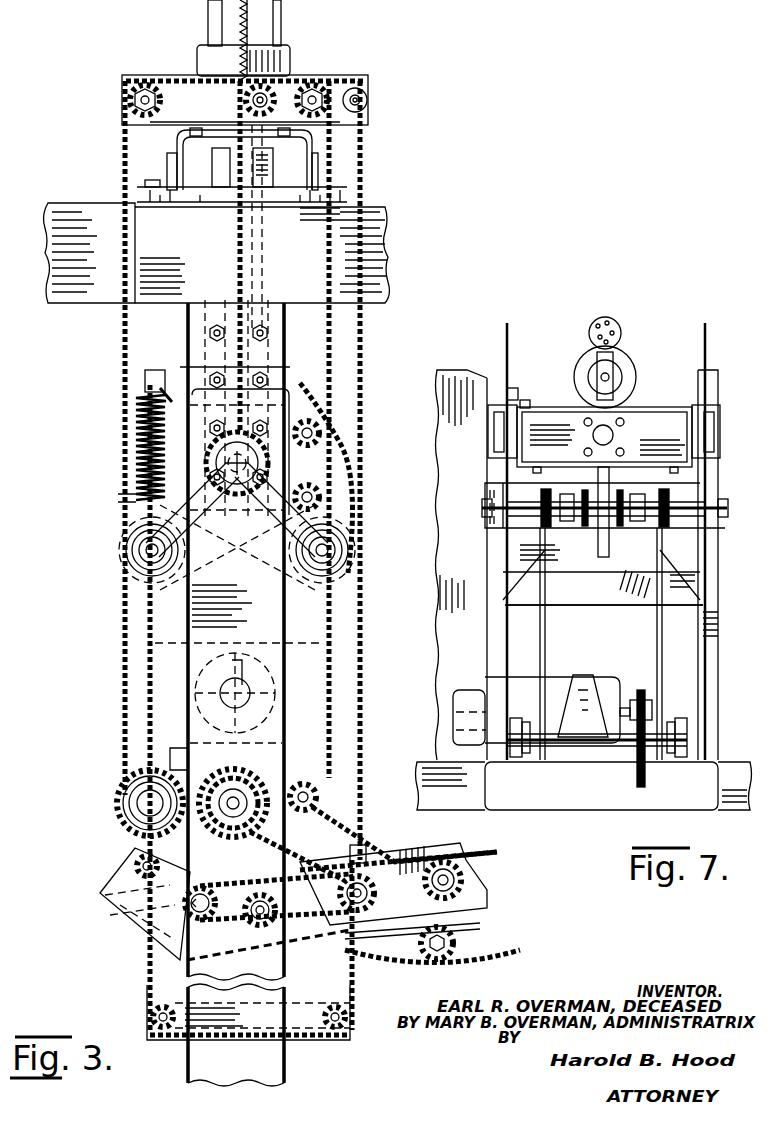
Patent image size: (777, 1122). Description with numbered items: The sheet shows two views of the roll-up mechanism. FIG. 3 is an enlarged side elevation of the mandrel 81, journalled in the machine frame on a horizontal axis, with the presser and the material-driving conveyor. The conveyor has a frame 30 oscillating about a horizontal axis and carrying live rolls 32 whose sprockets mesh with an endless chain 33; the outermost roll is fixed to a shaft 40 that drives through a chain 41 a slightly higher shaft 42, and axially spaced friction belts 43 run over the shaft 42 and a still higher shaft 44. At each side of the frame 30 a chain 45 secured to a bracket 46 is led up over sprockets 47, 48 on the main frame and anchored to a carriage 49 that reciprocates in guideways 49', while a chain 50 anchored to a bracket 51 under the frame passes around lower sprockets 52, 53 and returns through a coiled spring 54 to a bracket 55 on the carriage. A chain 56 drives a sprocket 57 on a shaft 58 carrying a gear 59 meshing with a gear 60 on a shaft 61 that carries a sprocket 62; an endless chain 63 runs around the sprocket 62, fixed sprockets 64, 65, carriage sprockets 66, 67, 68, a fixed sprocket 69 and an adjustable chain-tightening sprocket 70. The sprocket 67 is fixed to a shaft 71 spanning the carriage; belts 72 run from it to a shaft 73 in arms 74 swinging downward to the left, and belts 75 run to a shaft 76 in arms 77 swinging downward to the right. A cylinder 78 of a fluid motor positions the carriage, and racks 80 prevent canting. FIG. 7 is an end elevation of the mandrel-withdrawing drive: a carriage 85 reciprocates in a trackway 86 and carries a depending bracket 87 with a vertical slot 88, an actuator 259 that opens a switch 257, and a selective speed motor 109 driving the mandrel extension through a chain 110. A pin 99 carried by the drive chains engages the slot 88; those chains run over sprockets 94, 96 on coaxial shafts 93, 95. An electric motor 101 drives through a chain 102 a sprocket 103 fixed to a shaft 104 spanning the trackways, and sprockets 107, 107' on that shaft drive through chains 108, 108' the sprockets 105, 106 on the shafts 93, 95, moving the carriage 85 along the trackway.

In FIG. 3, the cylinder 78 is at (265, 25).
In FIG. 3, the rack 80 is at (212, 22).
In FIG. 3, the sprocket 47 is at (368, 118).
In FIG. 3, the sprocket 48 is at (290, 78).
In FIG. 3, the sprocket 64 is at (122, 112).
In FIG. 3, the sprocket 65 is at (322, 82).
In FIG. 3, the guideways 49' is at (242, 165).
In FIG. 3, the chain 45 is at (252, 241).
In FIG. 3, the endless chain 63 is at (122, 162).
In FIG. 3, the chain 50 is at (153, 645).
In FIG. 3, the carriage 49 is at (224, 410).
In FIG. 3, the bracket 55 is at (145, 376).
In FIG. 3, the coiled spring 54 is at (140, 424).
In FIG. 3, the sprocket 67 is at (118, 498).
In FIG. 3, the shaft 71 is at (186, 460).
In FIG. 3, the sprocket 66 is at (317, 430).
In FIG. 3, the sprocket 68 is at (320, 492).
In FIG. 3, the shaft 73 is at (140, 552).
In FIG. 3, the arms 74 is at (130, 535).
In FIG. 3, the belts 72 is at (122, 576).
In FIG. 3, the shaft 76 is at (344, 552).
In FIG. 3, the arms 77 is at (348, 569).
In FIG. 3, the belts 75 is at (292, 556).
In FIG. 3, the mandrel 81 is at (248, 671).
In FIG. 3, the gear 60 is at (125, 832).
In FIG. 3, the sprocket 62 is at (128, 795).
In FIG. 3, the shaft 61 is at (140, 806).
In FIG. 3, the gear 59 is at (255, 780).
In FIG. 3, the shaft 58 is at (245, 795).
In FIG. 3, the chain-tightening sprocket 70 is at (180, 756).
In FIG. 3, the sprocket 69 is at (315, 788).
In FIG. 3, the sprocket 57 is at (283, 830).
In FIG. 3, the bracket 46 is at (350, 852).
In FIG. 3, the friction belts 43 is at (102, 895).
In FIG. 3, the shaft 42 is at (130, 915).
In FIG. 3, the shaft 44 is at (136, 868).
In FIG. 3, the chain 41 is at (190, 950).
In FIG. 3, the shaft 40 is at (283, 945).
In FIG. 3, the bracket 51 is at (340, 952).
In FIG. 3, the frame 30 is at (485, 900).
In FIG. 3, the live rolls 32 is at (480, 880).
In FIG. 3, the chain 56 is at (395, 860).
In FIG. 3, the endless chain 33 is at (510, 955).
In FIG. 3, the sprocket 53 is at (147, 1010).
In FIG. 3, the sprocket 52 is at (333, 1032).
In FIG. 7, the switch 257 is at (514, 388).
In FIG. 7, the carriage 85 is at (660, 408).
In FIG. 7, the vertical slot 88 is at (604, 525).
In FIG. 7, the selective speed motor 109 is at (625, 362).
In FIG. 7, the chain 110 is at (640, 400).
In FIG. 7, the actuator 259 is at (530, 403).
In FIG. 7, the trackway 86 is at (490, 425).
In FIG. 7, the shaft 95 is at (482, 508).
In FIG. 7, the shaft 93 is at (728, 508).
In FIG. 7, the sprocket 106 is at (545, 489).
In FIG. 7, the sprocket 105 is at (665, 489).
In FIG. 7, the sprocket 96 is at (573, 521).
In FIG. 7, the pin 99 is at (588, 526).
In FIG. 7, the sprocket 94 is at (632, 521).
In FIG. 7, the chain 108' is at (524, 644).
In FIG. 7, the chain 108 is at (679, 644).
In FIG. 7, the bracket 87 is at (604, 617).
In FIG. 7, the electric motor 101 is at (555, 676).
In FIG. 7, the shaft 104 is at (585, 768).
In FIG. 7, the sprocket 107' is at (527, 778).
In FIG. 7, the sprocket 107 is at (677, 778).
In FIG. 7, the sprocket 103 is at (640, 790).
In FIG. 7, the chain 102 is at (640, 690).